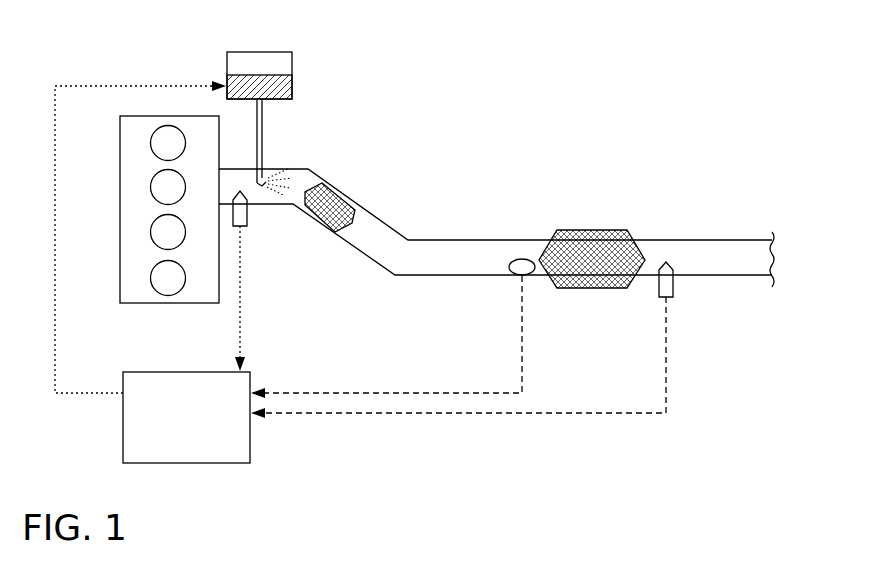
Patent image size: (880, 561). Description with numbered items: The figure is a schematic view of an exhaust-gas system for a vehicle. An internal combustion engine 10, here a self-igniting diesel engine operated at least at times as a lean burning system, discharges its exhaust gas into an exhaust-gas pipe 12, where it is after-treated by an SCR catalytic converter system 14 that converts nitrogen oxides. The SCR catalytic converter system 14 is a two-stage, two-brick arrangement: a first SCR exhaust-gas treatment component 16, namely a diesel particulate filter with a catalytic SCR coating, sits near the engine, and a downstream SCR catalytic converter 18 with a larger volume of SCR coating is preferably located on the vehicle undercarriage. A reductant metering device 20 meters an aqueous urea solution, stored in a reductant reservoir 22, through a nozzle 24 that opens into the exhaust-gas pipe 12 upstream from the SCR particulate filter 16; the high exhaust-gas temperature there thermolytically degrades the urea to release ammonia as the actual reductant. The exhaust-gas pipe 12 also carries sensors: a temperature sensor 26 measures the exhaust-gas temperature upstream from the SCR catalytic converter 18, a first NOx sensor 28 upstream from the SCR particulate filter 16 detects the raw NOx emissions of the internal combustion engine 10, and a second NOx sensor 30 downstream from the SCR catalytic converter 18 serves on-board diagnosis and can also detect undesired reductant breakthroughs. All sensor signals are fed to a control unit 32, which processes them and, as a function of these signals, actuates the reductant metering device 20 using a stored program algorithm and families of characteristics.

The internal combustion engine 10 is at (138, 182).
The exhaust-gas pipe 12 is at (382, 247).
The SCR catalytic converter system 14 is at (496, 257).
The SCR exhaust-gas treatment component 16 is at (337, 203).
The SCR catalytic converter 18 is at (622, 242).
The reductant metering device 20 is at (313, 103).
The reductant reservoir 22 is at (272, 59).
The nozzle 24 is at (262, 177).
The temperature sensor 26 is at (508, 267).
The first NOx sensor 28 is at (244, 219).
The second NOx sensor 30 is at (673, 287).
The control unit 32 is at (152, 274).